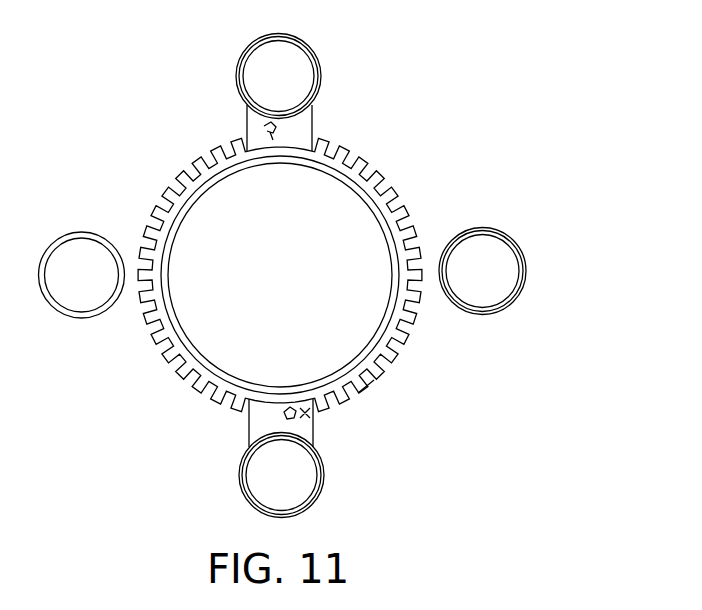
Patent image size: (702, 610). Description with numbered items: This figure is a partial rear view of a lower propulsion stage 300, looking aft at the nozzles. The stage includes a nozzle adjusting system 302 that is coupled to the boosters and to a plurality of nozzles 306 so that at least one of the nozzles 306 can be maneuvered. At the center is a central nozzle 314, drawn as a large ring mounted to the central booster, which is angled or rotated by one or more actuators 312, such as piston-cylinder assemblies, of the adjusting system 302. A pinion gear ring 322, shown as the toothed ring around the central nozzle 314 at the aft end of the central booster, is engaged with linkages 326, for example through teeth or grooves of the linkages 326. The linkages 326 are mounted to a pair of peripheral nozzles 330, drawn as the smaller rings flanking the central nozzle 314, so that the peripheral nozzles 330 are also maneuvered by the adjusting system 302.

The lower propulsion stage 300 is at (541, 176).
The nozzle adjusting system 302 is at (238, 123).
The nozzles 306 is at (330, 90).
The actuators 312 is at (305, 415).
The central nozzle 314 is at (383, 367).
The pinion gear ring 322 is at (158, 325).
The linkages 326 is at (262, 420).
The peripheral nozzles 330 is at (513, 302).